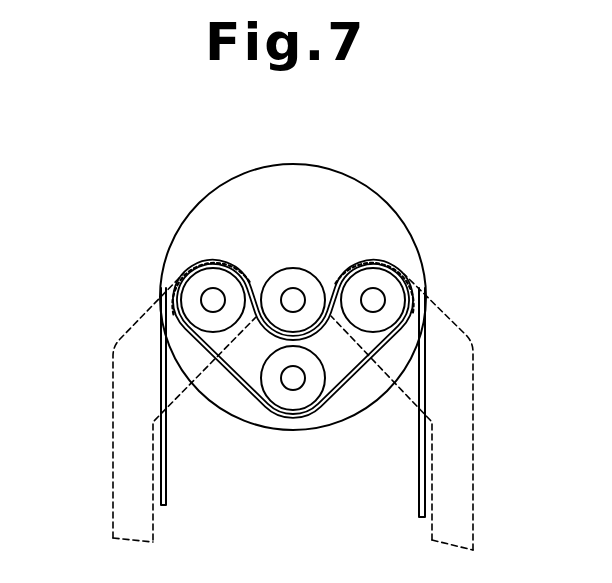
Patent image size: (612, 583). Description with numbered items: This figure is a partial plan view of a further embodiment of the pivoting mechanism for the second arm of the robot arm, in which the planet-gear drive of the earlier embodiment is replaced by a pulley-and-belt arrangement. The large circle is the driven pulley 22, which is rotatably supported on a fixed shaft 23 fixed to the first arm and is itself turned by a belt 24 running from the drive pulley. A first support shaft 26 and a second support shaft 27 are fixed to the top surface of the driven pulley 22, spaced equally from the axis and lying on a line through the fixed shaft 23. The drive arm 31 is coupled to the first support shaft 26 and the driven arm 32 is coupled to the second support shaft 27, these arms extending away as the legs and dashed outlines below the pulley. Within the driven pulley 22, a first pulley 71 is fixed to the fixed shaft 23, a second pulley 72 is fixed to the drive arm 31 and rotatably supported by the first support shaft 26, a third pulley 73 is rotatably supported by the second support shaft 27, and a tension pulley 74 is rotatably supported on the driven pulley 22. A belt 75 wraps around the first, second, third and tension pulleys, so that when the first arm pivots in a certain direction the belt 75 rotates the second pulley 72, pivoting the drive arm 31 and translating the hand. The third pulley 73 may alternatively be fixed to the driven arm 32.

The driven pulley 22 is at (342, 174).
The fixed shaft 23 is at (300, 297).
The belt 24 is at (418, 478).
The first support shaft 26 is at (223, 305).
The second support shaft 27 is at (366, 305).
The drive arm 31 is at (112, 476).
The driven arm 32 is at (474, 464).
The first pulley 71 is at (265, 281).
The second pulley 72 is at (218, 276).
The third pulley 73 is at (378, 276).
The tension pulley 74 is at (307, 400).
The belt 75 is at (247, 390).